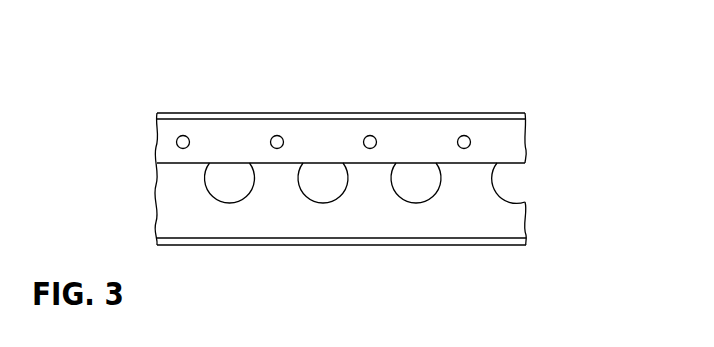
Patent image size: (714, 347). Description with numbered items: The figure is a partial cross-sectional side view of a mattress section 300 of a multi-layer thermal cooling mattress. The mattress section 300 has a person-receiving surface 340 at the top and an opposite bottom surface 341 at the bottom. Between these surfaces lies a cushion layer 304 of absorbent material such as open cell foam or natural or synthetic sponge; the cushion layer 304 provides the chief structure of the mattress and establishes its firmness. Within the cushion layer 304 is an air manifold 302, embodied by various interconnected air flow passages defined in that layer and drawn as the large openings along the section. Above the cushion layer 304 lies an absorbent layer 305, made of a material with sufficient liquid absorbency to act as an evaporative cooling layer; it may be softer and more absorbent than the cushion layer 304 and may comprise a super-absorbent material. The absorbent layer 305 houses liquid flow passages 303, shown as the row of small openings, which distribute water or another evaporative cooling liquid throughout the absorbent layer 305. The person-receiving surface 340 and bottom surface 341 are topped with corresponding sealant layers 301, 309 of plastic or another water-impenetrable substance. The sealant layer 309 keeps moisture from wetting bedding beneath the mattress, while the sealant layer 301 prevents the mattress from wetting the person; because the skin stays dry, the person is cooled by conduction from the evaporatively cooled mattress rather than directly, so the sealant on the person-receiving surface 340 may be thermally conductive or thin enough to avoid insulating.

The mattress section 300 is at (457, 85).
The sealant layer 301 is at (265, 106).
The person-receiving surface 340 is at (340, 112).
The liquid flow passages 303 is at (176, 142).
The absorbent layer 305 is at (517, 139).
The air manifold 302 is at (505, 187).
The cushion layer 304 is at (518, 220).
The bottom surface 341 is at (357, 246).
The sealant layer 309 is at (246, 253).